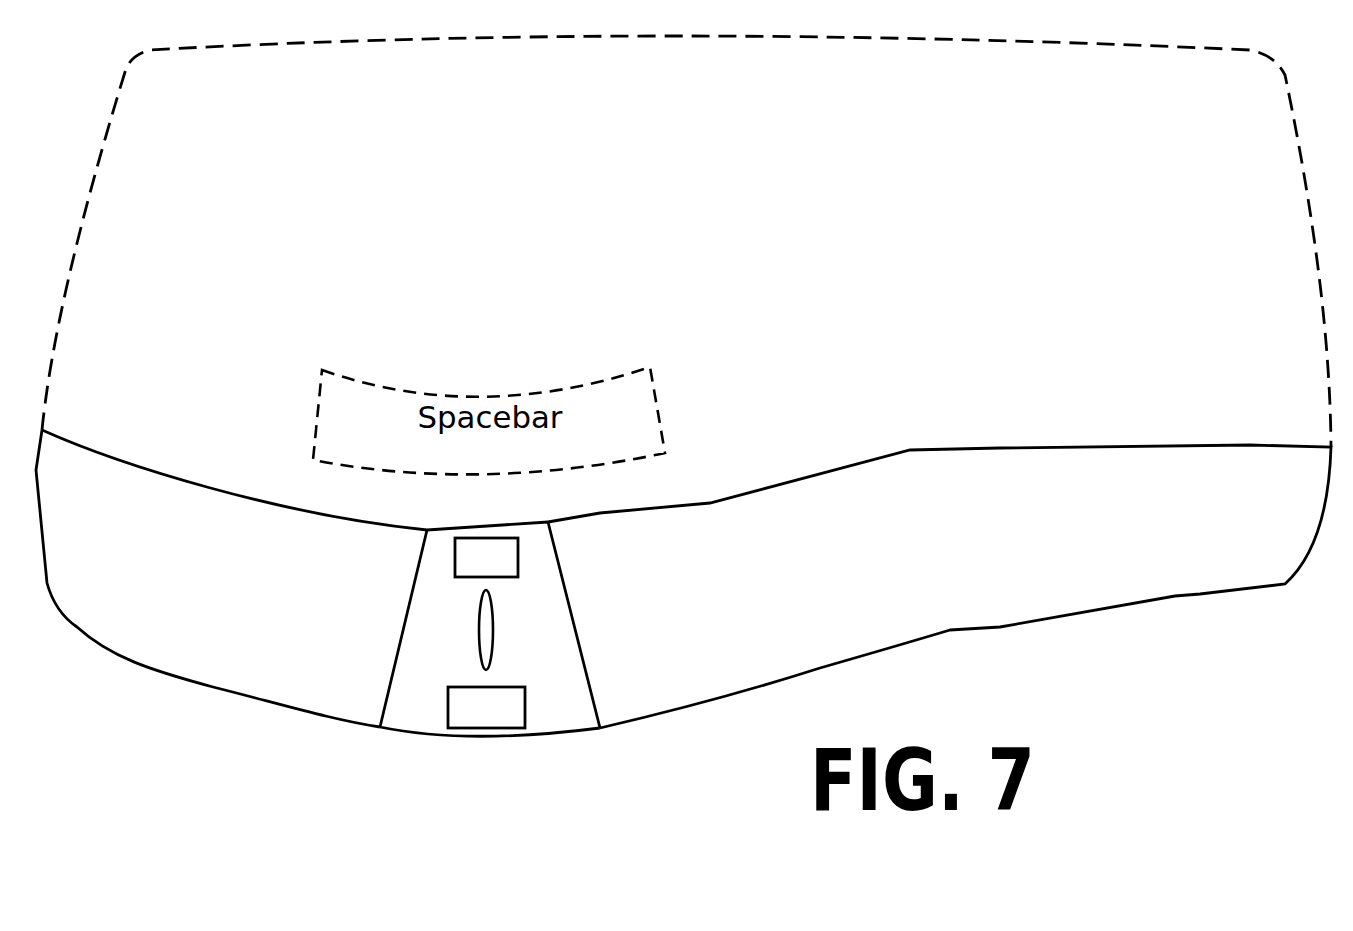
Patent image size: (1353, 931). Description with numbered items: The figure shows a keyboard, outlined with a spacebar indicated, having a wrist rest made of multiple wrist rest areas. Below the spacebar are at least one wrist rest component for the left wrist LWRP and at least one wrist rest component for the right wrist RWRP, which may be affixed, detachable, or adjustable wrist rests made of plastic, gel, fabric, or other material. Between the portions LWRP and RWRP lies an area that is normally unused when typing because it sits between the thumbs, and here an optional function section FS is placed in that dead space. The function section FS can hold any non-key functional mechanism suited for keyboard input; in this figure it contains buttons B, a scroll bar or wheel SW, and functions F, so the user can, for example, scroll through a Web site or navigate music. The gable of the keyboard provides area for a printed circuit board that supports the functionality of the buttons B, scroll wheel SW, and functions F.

The wrist rest component for the left wrist LWRP is at (231, 578).
The wrist rest component for the right wrist RWRP is at (939, 586).
The function section FS is at (557, 713).
The buttons B is at (486, 556).
The functions F is at (486, 707).
The scroll bar or wheel SW is at (493, 617).